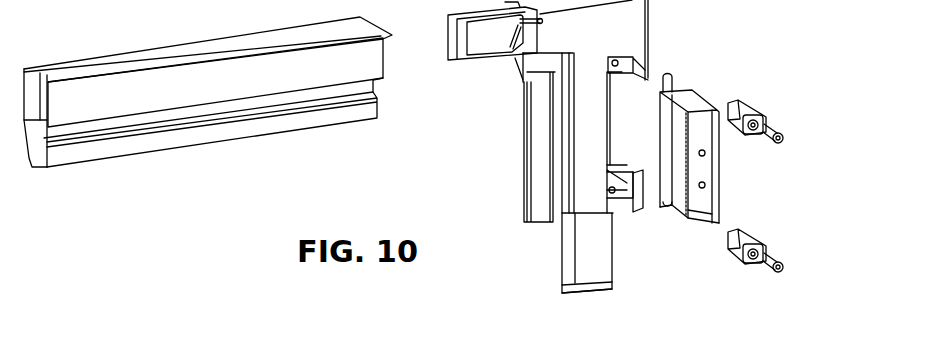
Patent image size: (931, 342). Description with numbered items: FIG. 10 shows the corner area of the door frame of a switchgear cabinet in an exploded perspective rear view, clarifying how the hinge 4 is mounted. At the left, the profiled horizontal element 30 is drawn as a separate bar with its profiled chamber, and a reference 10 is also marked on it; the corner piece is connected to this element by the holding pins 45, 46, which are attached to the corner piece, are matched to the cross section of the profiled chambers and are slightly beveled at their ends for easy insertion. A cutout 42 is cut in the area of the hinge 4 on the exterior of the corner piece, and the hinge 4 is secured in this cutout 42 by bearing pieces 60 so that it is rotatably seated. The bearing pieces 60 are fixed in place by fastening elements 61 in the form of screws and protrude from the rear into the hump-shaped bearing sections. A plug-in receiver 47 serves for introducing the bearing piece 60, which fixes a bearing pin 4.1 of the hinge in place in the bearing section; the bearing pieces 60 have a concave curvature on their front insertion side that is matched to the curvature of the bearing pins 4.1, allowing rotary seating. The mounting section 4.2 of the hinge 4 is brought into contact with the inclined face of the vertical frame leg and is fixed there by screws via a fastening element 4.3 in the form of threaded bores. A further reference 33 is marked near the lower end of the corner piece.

The profiled horizontal element 30 is at (195, 155).
The guide rail / groove 10 is at (382, 90).
The holding pin 46 is at (470, 62).
The plug-in receiver 47 is at (640, 80).
The cutout 42 is at (628, 155).
The holding pin 45 is at (560, 270).
The stem end 33 is at (565, 312).
The hinge 4 is at (716, 160).
The bearing pin 4.1 is at (672, 76).
The mounting section 4.2 is at (698, 225).
The fastening element 4.3 is at (717, 155).
The bearing piece 60 is at (762, 113).
The fastening element 61 is at (772, 273).